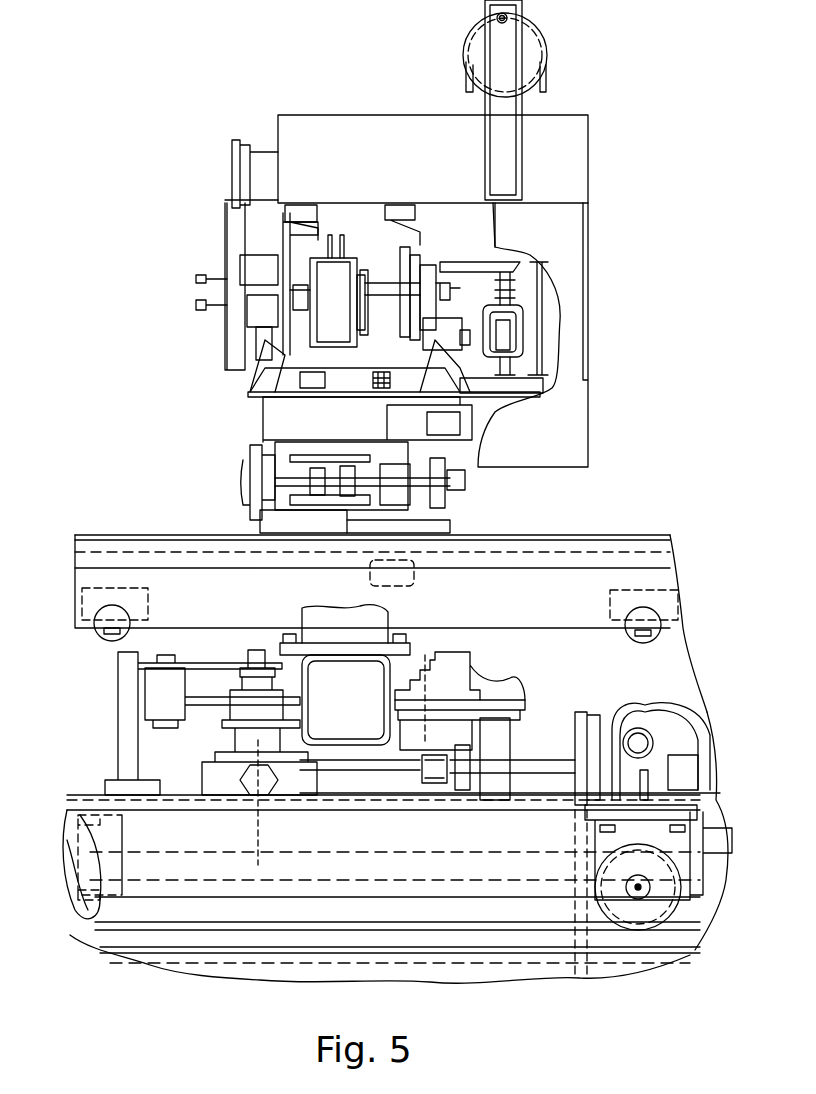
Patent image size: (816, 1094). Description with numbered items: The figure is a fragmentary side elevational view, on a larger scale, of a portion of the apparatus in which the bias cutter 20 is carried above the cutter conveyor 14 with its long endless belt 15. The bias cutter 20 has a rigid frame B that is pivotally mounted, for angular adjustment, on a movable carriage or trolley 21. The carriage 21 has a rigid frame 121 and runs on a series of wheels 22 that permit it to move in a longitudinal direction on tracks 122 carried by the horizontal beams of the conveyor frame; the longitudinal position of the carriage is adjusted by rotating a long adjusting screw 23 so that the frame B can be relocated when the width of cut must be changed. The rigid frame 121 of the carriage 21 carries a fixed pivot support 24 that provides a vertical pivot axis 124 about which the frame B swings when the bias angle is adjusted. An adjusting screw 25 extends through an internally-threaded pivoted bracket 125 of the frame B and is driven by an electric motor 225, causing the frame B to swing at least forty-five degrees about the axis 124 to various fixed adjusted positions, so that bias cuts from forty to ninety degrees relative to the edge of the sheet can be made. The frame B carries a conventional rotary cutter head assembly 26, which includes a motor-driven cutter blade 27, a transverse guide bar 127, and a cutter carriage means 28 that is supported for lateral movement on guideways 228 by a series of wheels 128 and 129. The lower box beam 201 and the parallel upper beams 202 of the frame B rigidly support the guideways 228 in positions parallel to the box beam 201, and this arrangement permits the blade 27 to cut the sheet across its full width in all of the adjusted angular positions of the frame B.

The bias cutter 20 is at (586, 105).
The parallel upper beams 202 is at (295, 226).
The wheels 128 is at (258, 337).
The wheels 129 is at (262, 368).
The guideways 228 is at (275, 362).
The cutter carriage means 28 is at (272, 420).
The rotary cutter head assembly 26 is at (240, 477).
The motor-driven cutter blade 27 is at (258, 530).
The transverse guide bar 127 is at (340, 527).
The endless belt 15 is at (598, 537).
The cutter conveyor 14 is at (262, 565).
The lower box beam 201 is at (382, 720).
The electric motor 225 is at (668, 700).
The adjusting screw 25 is at (527, 760).
The internally-threaded pivoted bracket 125 is at (448, 780).
The fixed pivot support 24 is at (242, 800).
The vertical pivot axis 124 is at (262, 845).
The adjusting screw 23 is at (336, 848).
The rigid frame 121 is at (258, 897).
The tracks 122 is at (420, 915).
The wheels 22 is at (92, 930).
The carriage 21 is at (706, 806).
The rigid frame B is at (296, 112).